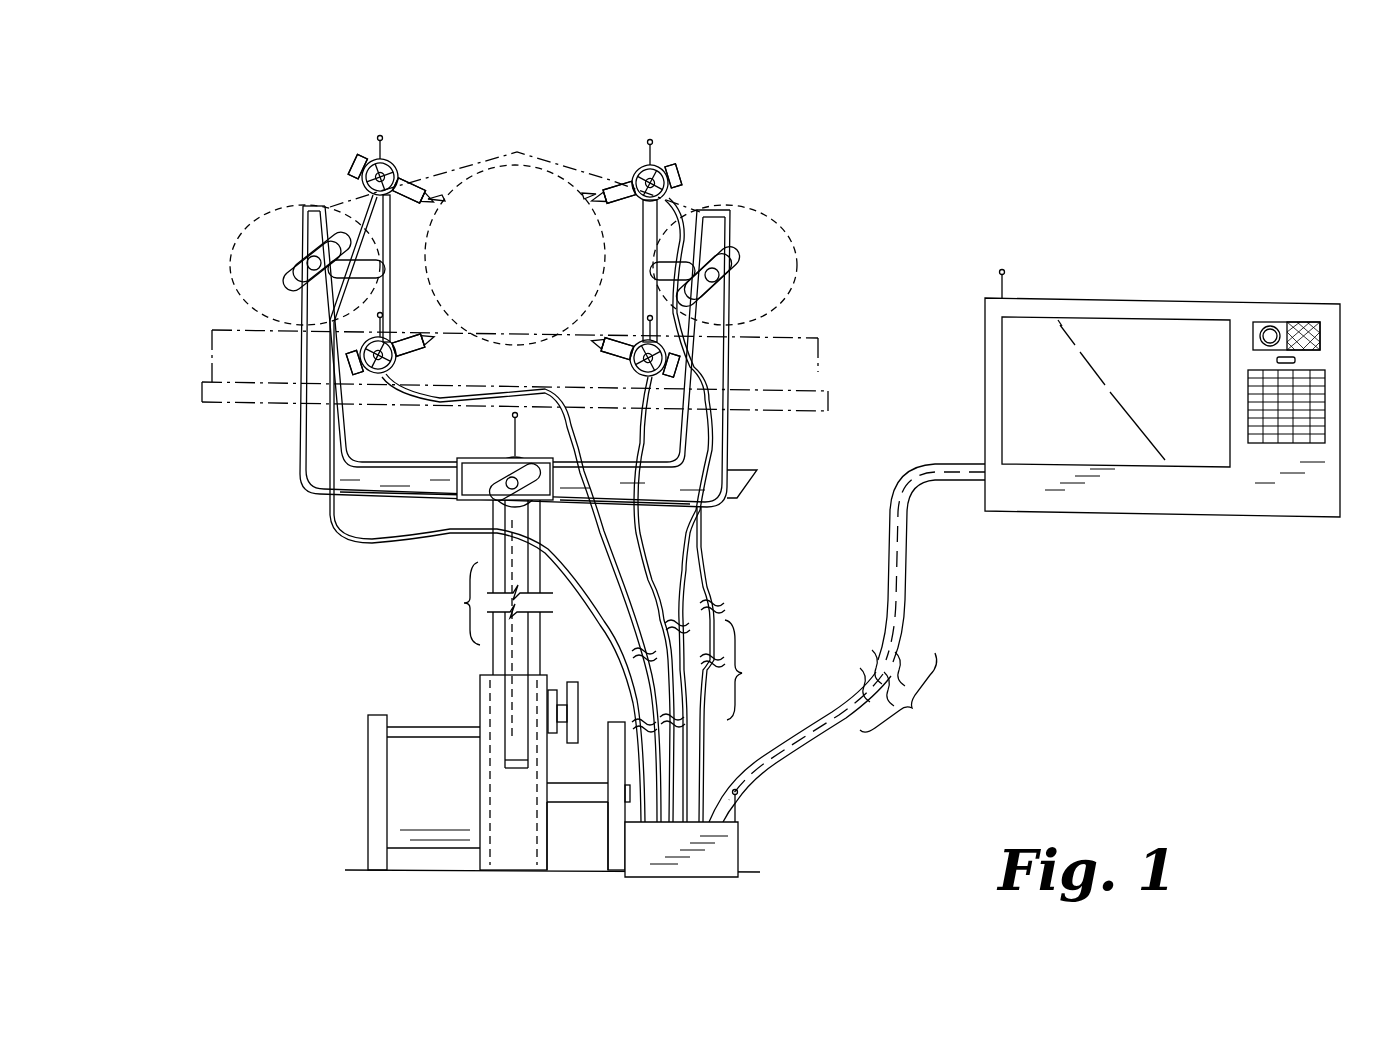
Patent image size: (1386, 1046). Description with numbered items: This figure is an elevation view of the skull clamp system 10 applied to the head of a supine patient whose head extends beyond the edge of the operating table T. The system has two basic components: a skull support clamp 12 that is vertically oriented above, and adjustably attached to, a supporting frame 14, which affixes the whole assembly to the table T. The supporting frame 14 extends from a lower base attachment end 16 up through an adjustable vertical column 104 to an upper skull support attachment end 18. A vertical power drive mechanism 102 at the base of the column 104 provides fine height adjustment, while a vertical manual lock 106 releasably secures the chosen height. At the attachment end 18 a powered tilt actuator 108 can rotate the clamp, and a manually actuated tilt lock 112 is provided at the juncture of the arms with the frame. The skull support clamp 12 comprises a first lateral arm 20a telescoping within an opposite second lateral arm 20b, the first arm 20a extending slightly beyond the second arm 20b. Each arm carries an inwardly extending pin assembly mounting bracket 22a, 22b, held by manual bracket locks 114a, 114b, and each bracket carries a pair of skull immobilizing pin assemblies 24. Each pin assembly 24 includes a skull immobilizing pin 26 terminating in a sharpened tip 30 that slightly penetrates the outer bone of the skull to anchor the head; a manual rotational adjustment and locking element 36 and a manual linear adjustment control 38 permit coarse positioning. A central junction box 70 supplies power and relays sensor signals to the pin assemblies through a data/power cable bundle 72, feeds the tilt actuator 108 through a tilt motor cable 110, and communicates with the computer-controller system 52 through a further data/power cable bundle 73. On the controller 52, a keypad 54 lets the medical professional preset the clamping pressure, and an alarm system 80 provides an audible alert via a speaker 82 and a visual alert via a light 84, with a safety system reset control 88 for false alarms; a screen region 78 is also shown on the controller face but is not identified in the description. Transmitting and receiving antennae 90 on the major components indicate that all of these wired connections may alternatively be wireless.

The skull clamp system 10 is at (942, 192).
The skull support clamp 12 is at (700, 196).
The supporting frame 14 is at (475, 548).
The lower base attachment end 16 is at (500, 805).
The upper skull support attachment end 18 is at (480, 516).
The first lateral arm 20a is at (385, 478).
The second lateral arm 20b is at (610, 478).
The first pin assembly mounting bracket 22a is at (392, 285).
The second pin assembly mounting bracket 22b is at (652, 282).
The skull immobilizing pin assembly 24 is at (373, 158).
The skull immobilizing pin 26 is at (440, 185).
The sharpened tip 30 is at (430, 195).
The manual rotational adjustment and locking element 36 is at (405, 168).
The manual linear adjustment control 38 is at (352, 162).
The computer-controller system 52 is at (1095, 300).
The keypad 54 is at (1285, 448).
The central junction box 70 is at (738, 845).
The data/power cable bundle 72 is at (643, 600).
The data/power cable bundle 73 is at (905, 538).
The display 78 is at (1050, 369).
The alarm system 80 is at (1288, 322).
The speaker 82 is at (1305, 322).
The light 84 is at (1262, 325).
The safety system reset control 88 is at (1300, 360).
The transmitting and receiving antennae 90 is at (380, 138).
The vertical power drive mechanism 102 is at (575, 815).
The adjustable vertical column 104 is at (478, 722).
The vertical manual lock 106 is at (578, 692).
The powered tilt actuator 108 is at (495, 445).
The tilt motor cable 110 is at (600, 534).
The manually actuated tilt lock 112 is at (331, 518).
The manual bracket lock 114a is at (290, 263).
The manual bracket lock 114b is at (740, 255).
The table T is at (222, 418).